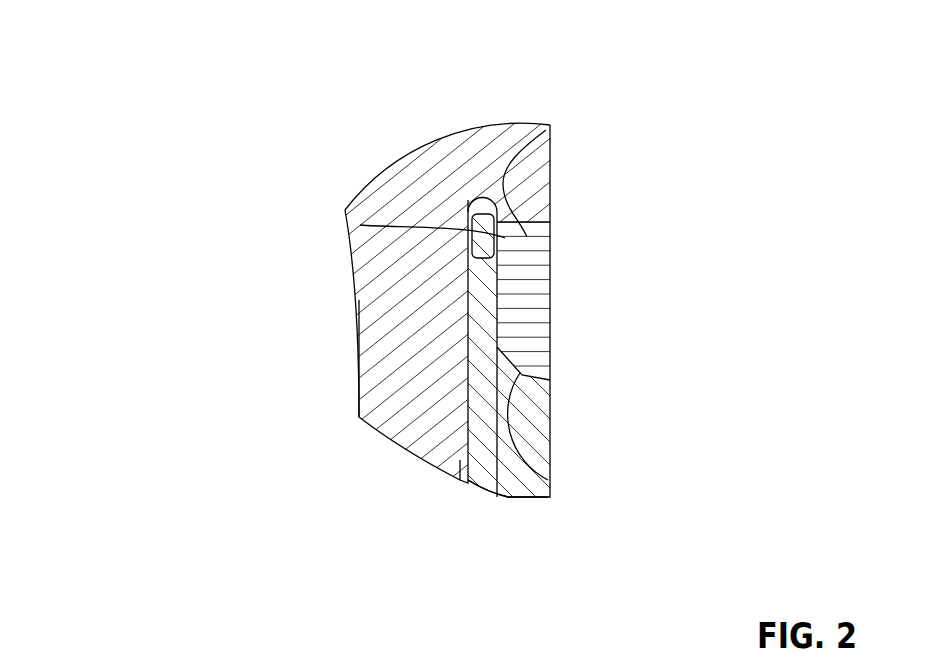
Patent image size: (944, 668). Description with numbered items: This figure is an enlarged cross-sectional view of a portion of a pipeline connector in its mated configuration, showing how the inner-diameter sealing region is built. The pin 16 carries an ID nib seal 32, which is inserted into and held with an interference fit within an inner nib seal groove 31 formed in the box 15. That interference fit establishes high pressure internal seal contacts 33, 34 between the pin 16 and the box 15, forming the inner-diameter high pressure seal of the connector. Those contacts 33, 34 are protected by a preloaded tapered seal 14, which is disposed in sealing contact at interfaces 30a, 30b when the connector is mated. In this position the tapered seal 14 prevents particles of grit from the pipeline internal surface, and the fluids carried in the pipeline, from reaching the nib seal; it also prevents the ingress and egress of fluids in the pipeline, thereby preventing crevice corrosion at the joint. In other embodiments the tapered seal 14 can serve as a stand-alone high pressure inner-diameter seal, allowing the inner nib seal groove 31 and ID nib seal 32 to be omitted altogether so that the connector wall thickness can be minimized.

The preloaded tapered seal 14 is at (595, 266).
The box 15 is at (316, 272).
The pin 16 is at (325, 522).
The interface 30a is at (548, 135).
The interface 30b is at (549, 482).
The inner nib seal groove 31 is at (446, 163).
The ID nib seal 32 is at (484, 165).
The high pressure internal seal contact 33 is at (360, 225).
The high pressure internal seal contact 34 is at (360, 332).